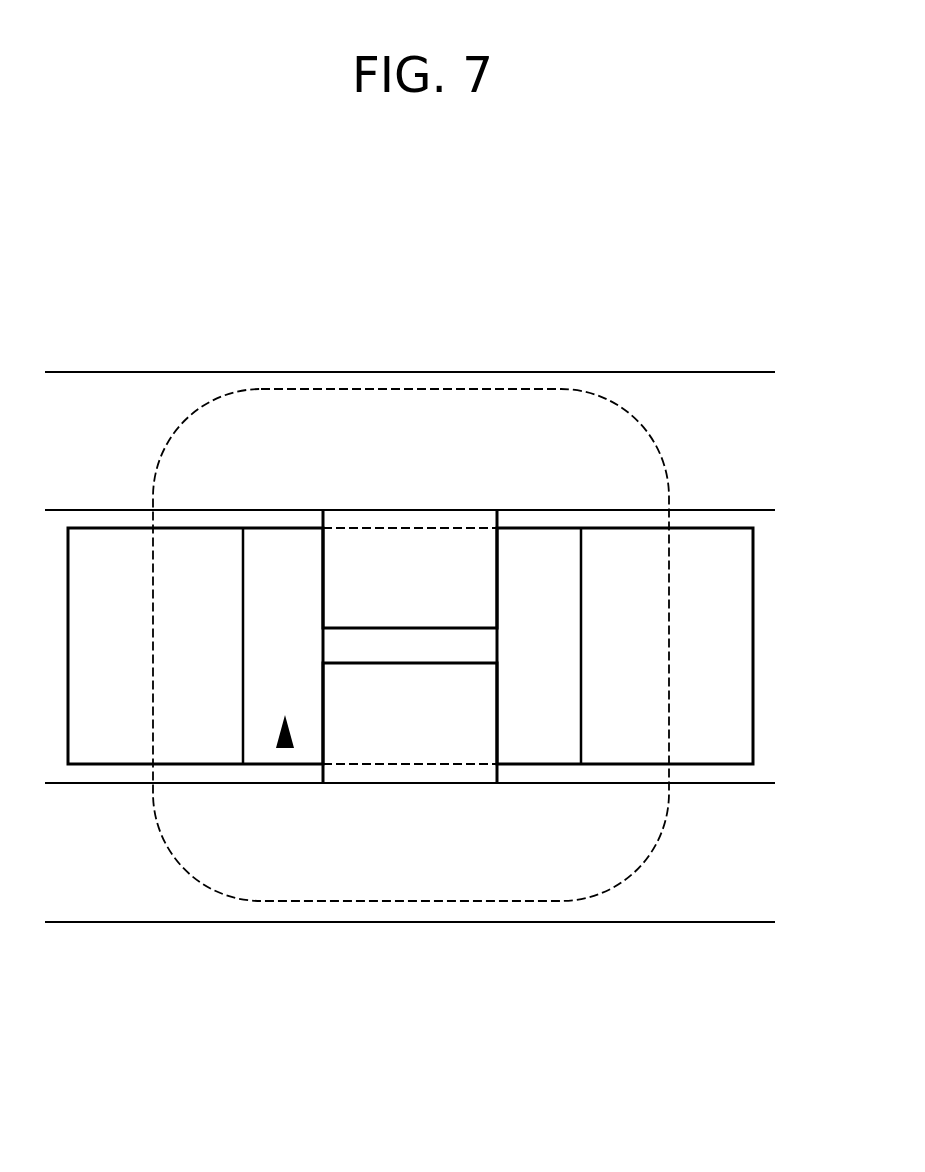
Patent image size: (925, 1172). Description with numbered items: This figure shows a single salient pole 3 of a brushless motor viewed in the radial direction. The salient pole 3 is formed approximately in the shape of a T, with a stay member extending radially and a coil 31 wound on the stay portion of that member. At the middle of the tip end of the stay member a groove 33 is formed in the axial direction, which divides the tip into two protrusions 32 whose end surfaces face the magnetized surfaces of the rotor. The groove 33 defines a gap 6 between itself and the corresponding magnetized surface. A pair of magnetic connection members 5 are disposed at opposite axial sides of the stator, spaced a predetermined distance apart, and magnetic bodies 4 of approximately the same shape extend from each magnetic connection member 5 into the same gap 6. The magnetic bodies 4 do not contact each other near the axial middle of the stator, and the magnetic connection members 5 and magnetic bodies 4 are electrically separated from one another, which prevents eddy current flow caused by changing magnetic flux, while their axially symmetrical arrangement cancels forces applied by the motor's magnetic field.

The salient pole 3 is at (410, 302).
The magnetic body 4 is at (497, 570).
The magnetic connection member 5 is at (190, 372).
The gap 6 is at (285, 748).
The coil 31 is at (495, 389).
The protrusion 32 is at (107, 528).
The groove 33 is at (548, 528).